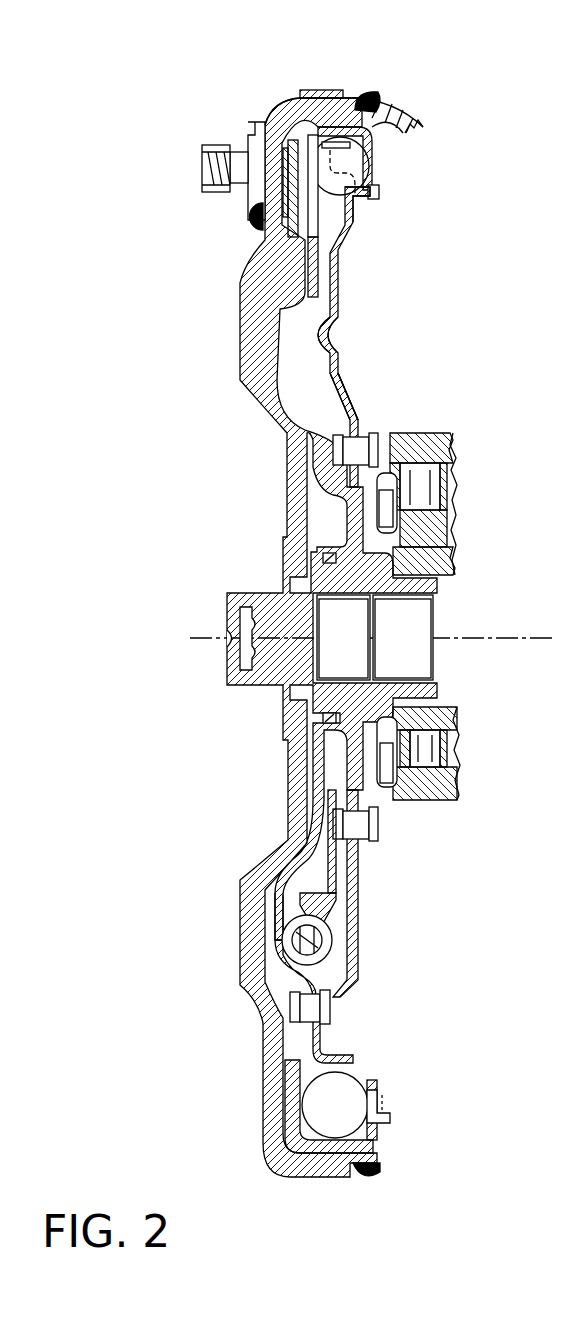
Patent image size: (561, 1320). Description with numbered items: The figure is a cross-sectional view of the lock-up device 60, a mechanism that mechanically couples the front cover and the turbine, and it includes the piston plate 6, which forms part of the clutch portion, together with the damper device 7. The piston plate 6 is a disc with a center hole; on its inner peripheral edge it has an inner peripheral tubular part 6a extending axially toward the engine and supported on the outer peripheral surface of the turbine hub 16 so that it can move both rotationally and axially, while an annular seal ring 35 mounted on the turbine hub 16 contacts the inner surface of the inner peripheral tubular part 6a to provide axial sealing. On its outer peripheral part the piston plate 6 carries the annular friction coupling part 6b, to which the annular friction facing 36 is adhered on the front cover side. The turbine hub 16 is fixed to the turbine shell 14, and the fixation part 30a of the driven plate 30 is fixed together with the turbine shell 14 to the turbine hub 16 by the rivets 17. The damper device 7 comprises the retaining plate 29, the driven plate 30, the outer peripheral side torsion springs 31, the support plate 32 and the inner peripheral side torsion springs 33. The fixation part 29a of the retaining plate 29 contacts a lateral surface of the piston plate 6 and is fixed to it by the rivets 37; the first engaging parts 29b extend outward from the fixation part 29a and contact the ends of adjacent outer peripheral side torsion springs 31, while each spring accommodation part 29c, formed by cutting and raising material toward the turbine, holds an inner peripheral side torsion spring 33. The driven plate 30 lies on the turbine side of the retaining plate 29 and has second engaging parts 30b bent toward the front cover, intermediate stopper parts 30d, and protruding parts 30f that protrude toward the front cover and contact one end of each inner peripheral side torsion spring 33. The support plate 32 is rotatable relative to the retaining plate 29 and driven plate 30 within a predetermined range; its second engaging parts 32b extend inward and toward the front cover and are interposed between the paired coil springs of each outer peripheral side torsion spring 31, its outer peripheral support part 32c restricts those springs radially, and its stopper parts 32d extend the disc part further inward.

The piston plate 6 is at (275, 307).
The inner peripheral tubular part 6a is at (333, 547).
The friction coupling part 6b is at (280, 137).
The damper device 7 is at (312, 137).
The turbine shell 14 is at (357, 400).
The turbine hub 16 is at (408, 588).
The rivets 17 is at (363, 440).
The retaining plate 29 is at (303, 227).
The fixation part 29a is at (313, 1037).
The first engaging parts 29b is at (335, 150).
The spring accommodation part 29c is at (305, 943).
The driven plate 30 is at (338, 293).
The fixation part 30a is at (330, 413).
The second engaging parts 30b is at (363, 167).
The intermediate stopper parts 30d is at (367, 200).
The protruding parts 30f is at (315, 337).
The outer peripheral side torsion springs 31 is at (360, 170).
The support plate 32 is at (377, 130).
The second engaging parts 32b is at (250, 213).
The outer peripheral support part 32c is at (333, 128).
The stopper parts 32d is at (367, 194).
The inner peripheral side torsion springs 33 is at (330, 938).
The seal ring 35 is at (327, 563).
The friction facing 36 is at (243, 175).
The rivets 37 is at (293, 995).
The lock-up device 60 is at (285, 128).